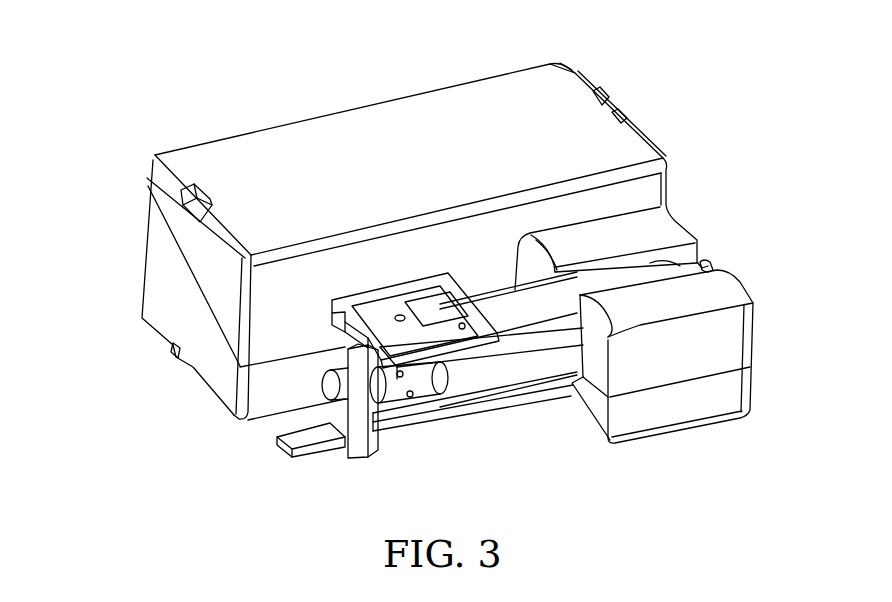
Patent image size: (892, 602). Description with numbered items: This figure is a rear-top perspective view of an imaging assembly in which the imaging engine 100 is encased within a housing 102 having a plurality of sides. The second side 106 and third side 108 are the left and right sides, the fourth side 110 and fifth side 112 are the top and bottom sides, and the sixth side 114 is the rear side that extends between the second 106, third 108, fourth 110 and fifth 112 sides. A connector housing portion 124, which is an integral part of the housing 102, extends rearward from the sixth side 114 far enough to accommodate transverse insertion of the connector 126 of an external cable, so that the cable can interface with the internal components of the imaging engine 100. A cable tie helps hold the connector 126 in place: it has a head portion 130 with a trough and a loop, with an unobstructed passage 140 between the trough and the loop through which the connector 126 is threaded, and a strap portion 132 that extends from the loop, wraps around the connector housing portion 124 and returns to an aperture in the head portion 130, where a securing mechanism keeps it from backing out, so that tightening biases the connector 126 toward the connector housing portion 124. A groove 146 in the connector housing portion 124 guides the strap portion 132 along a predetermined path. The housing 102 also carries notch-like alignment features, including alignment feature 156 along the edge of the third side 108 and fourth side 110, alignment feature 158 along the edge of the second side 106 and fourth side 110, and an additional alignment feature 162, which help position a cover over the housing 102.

The imaging engine 100 is at (168, 55).
The housing 102 is at (565, 88).
The second side 106 is at (673, 138).
The third side 108 is at (178, 258).
The fourth side 110 is at (363, 137).
The fifth side 112 is at (215, 408).
The sixth side 114 is at (280, 380).
The connector housing portion 124 is at (728, 220).
The connector 126 is at (480, 383).
The head portion 130 is at (352, 465).
The strap portion 132 is at (418, 438).
The unobstructed passage 140 is at (341, 343).
The groove 146 is at (705, 265).
The alignment feature 156 is at (200, 190).
The alignment feature 158 is at (612, 108).
The additional alignment feature 162 is at (728, 285).